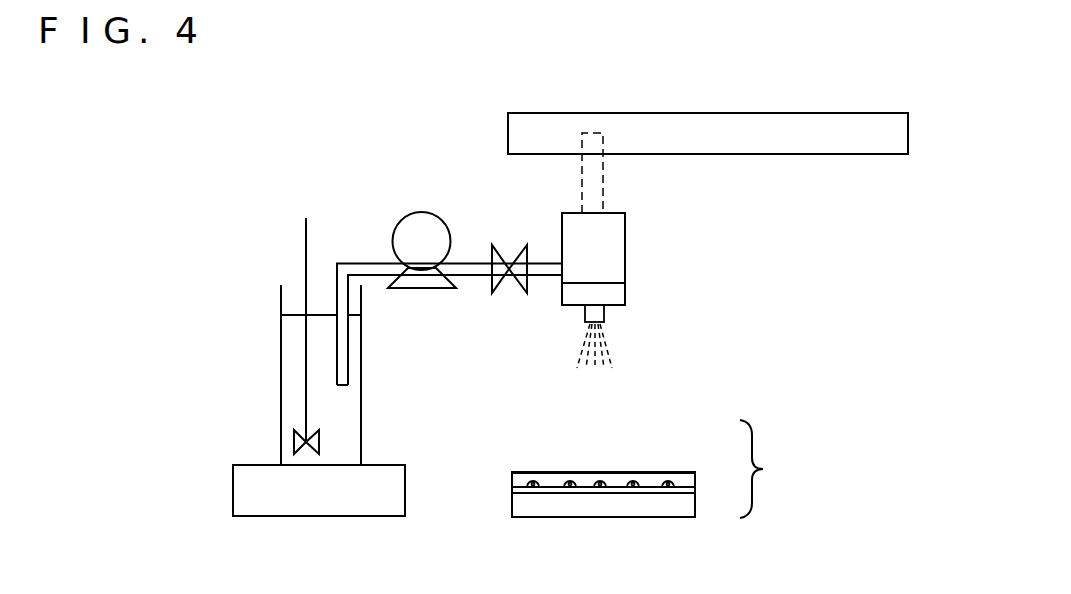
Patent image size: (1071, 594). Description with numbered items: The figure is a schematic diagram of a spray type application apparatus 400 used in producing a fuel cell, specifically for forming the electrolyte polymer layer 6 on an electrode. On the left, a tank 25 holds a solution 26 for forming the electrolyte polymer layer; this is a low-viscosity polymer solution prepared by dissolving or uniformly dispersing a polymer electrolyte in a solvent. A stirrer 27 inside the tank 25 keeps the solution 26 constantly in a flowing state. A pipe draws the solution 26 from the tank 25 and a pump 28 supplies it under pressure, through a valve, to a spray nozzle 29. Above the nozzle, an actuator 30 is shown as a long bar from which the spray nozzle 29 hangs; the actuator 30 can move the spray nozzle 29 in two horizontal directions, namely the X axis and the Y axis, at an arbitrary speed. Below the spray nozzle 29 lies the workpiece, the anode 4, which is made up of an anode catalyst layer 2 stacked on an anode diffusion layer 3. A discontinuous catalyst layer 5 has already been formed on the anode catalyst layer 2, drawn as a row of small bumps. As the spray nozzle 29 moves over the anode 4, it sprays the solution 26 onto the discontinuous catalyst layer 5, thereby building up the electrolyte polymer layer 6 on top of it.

The spray type application apparatus 400 is at (858, 99).
The actuator 30 is at (685, 133).
The spray nozzle 29 is at (615, 255).
The pump 28 is at (417, 221).
The tank 25 is at (361, 362).
The solution 26 is at (337, 418).
The stirrer 27 is at (305, 360).
The anode 4 is at (762, 469).
The anode diffusion layer 3 is at (672, 503).
The anode catalyst layer 2 is at (652, 488).
The discontinuous catalyst layer 5 is at (602, 482).
The electrolyte polymer layer 6 is at (547, 476).